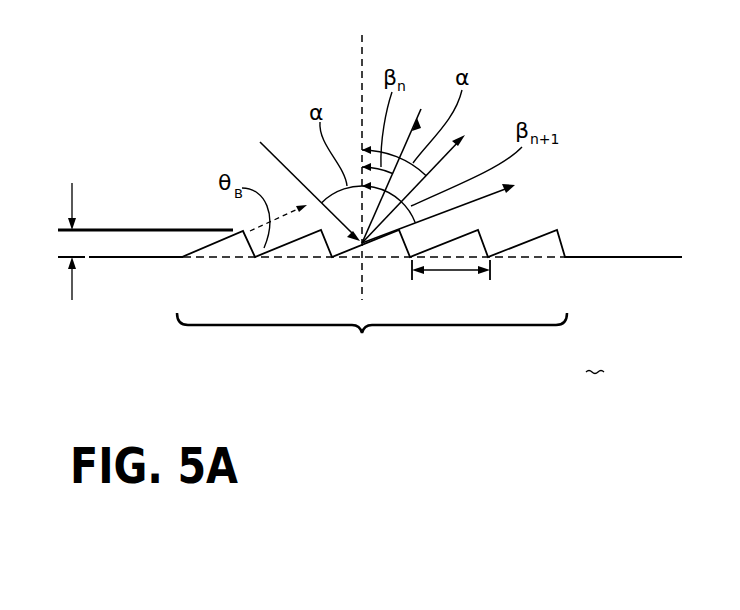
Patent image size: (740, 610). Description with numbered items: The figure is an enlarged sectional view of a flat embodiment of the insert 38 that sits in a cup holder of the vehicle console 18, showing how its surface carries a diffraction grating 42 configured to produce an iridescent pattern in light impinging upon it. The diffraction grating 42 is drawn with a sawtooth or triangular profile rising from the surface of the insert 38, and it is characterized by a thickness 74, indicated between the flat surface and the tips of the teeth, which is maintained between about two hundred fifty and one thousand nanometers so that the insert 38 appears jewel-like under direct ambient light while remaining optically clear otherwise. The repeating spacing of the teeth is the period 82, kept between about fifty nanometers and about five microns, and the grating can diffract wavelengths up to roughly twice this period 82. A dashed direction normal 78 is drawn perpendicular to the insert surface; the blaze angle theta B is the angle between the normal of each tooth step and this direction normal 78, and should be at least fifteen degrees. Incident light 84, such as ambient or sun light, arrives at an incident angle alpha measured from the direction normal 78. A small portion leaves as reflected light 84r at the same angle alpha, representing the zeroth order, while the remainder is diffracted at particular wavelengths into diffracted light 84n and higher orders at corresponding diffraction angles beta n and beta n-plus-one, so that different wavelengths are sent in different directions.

The console 18 is at (600, 360).
The insert 38 is at (625, 256).
The diffraction grating 42 is at (372, 339).
The thickness 74 is at (72, 202).
The direction normal 78 is at (362, 62).
The period 82 is at (433, 273).
The incident light 84 is at (302, 179).
The diffracted light 84n is at (404, 169).
The reflected light 84r is at (429, 180).